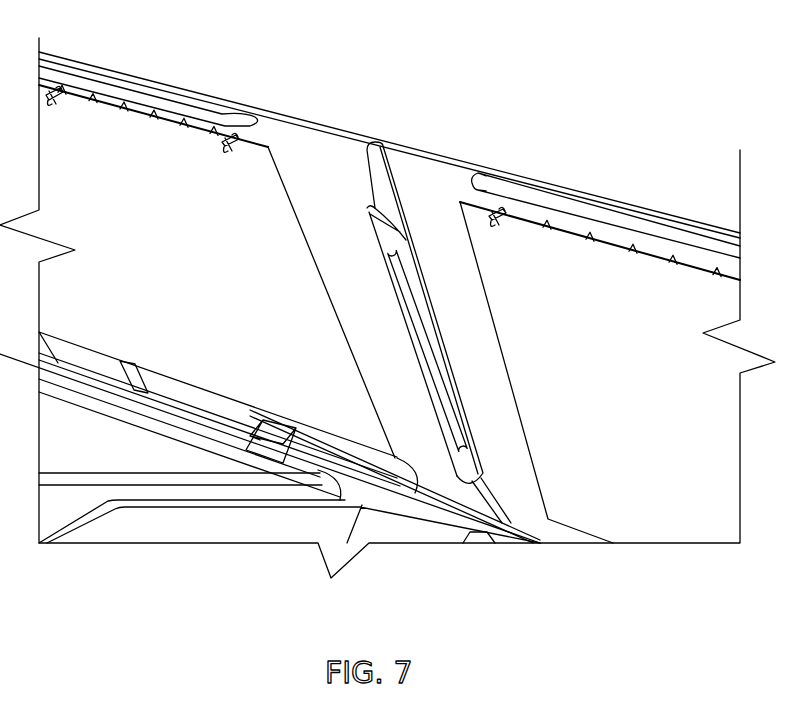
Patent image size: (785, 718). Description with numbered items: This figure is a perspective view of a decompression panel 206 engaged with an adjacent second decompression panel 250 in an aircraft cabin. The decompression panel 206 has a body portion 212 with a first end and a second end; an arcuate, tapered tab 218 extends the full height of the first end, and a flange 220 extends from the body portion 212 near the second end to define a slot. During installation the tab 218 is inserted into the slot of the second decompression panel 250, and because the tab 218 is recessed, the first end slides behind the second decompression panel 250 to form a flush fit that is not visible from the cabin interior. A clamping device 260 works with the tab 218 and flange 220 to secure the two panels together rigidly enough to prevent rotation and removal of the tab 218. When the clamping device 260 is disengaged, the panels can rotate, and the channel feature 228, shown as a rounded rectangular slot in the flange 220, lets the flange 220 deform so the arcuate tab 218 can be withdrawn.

The decompression panel 206 is at (213, 82).
The tab 218 is at (372, 147).
The flange 220 is at (382, 228).
The channel feature 228 is at (422, 335).
The second decompression panel 250 is at (582, 175).
The body portion 212 is at (622, 380).
The clamping device 260 is at (275, 425).